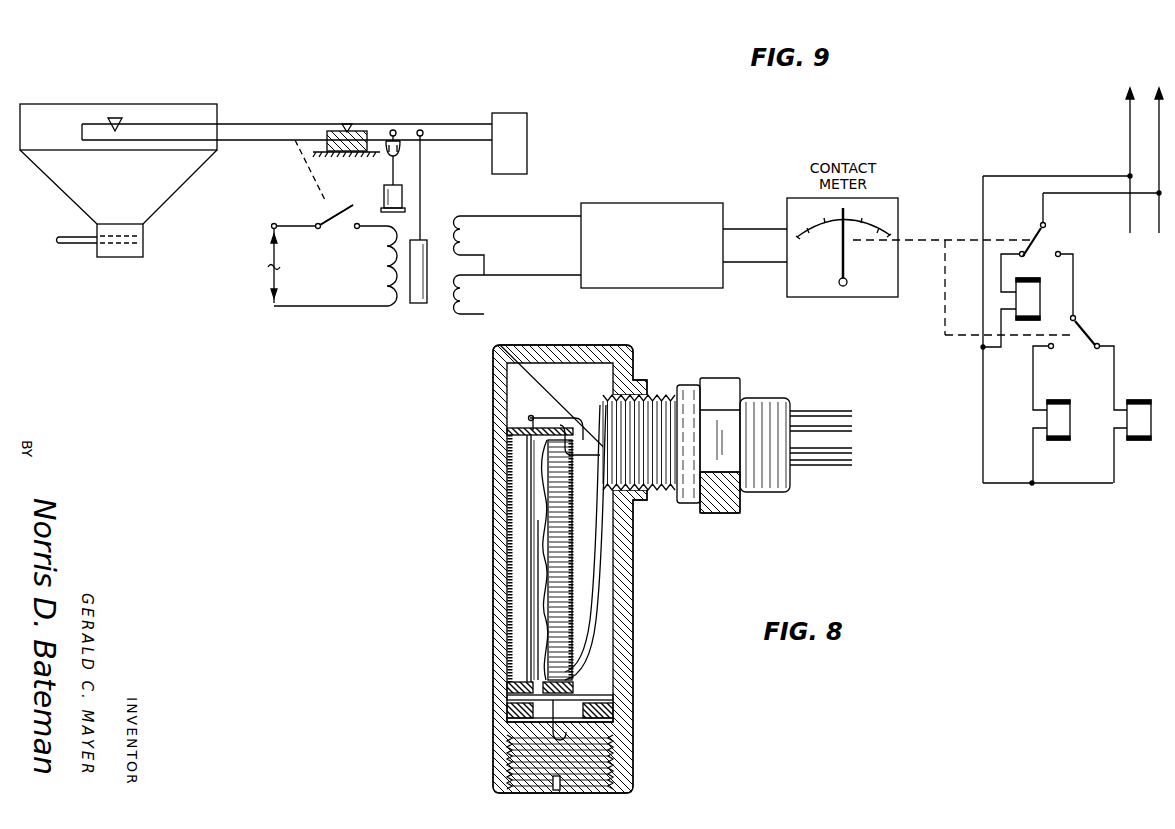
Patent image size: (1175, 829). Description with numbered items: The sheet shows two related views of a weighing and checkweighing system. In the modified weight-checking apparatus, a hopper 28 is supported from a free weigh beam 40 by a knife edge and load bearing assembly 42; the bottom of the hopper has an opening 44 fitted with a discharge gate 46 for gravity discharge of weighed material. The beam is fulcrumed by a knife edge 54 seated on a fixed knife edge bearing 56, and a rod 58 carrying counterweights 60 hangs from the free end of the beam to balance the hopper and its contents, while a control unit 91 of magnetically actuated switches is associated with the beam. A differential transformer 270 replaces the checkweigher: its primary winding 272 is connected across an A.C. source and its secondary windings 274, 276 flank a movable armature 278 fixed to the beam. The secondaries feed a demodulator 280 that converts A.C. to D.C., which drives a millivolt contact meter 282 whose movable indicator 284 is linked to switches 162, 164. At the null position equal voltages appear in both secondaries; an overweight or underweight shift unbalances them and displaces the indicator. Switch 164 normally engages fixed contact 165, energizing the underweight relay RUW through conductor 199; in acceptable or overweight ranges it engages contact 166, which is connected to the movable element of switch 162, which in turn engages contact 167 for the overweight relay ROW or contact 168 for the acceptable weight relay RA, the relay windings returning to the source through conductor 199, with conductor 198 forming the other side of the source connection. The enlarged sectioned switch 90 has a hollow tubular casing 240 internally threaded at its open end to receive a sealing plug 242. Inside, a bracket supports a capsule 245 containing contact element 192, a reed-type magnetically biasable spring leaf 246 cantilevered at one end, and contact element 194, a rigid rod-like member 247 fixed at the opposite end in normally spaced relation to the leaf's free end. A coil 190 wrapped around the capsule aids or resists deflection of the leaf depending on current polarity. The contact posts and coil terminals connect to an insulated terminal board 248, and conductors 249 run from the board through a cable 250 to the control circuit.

In FIG. 9, the hopper 28 is at (218, 110).
In FIG. 9, the weigh beam 40 is at (248, 141).
In FIG. 9, the knife edge and load bearing assembly 42 is at (116, 118).
In FIG. 9, the opening 44 is at (120, 257).
In FIG. 9, the discharge gate 46 is at (80, 245).
In FIG. 9, the knife edge 54 is at (347, 124).
In FIG. 9, the knife edge bearing 56 is at (360, 131).
In FIG. 9, the rod 58 is at (386, 166).
In FIG. 9, the counterweights 60 is at (383, 195).
In FIG. 9, the control unit 91 is at (528, 128).
In FIG. 9, the differential transformer 270 is at (397, 317).
In FIG. 9, the primary winding 272 is at (386, 288).
In FIG. 9, the secondary winding 274 is at (456, 236).
In FIG. 9, the secondary winding 276 is at (464, 294).
In FIG. 9, the movable armature 278 is at (421, 306).
In FIG. 9, the demodulator 280 is at (655, 203).
In FIG. 9, the millivolt contact meter 282 is at (803, 288).
In FIG. 9, the movable indicator 284 is at (846, 245).
In FIG. 9, the conductor 198 is at (1130, 143).
In FIG. 9, the conductor 199 is at (1159, 123).
In FIG. 9, the switch 162 is at (1080, 326).
In FIG. 9, the switch 164 is at (1037, 241).
In FIG. 9, the fixed contact 165 is at (1020, 252).
In FIG. 9, the fixed contact 166 is at (1062, 254).
In FIG. 9, the fixed contact 167 is at (1049, 349).
In FIG. 9, the fixed contact 168 is at (1102, 346).
In FIG. 9, the underweight relay RUW is at (1040, 300).
In FIG. 9, the overweight relay ROW is at (1058, 400).
In FIG. 9, the acceptable weight relay RA is at (1138, 441).
In FIG. 8, the switch 90 is at (646, 669).
In FIG. 8, the coil 190 is at (510, 460).
In FIG. 8, the contact element 192 is at (531, 567).
In FIG. 8, the contact element 194 is at (530, 628).
In FIG. 8, the casing 240 is at (622, 620).
In FIG. 8, the sealing plug 242 is at (595, 770).
In FIG. 8, the capsule 245 is at (522, 544).
In FIG. 8, the spring leaf 246 is at (528, 600).
In FIG. 8, the rod-like member 247 is at (540, 660).
In FIG. 8, the terminal board 248 is at (580, 570).
In FIG. 8, the conductors 249 is at (578, 417).
In FIG. 8, the cable 250 is at (765, 493).